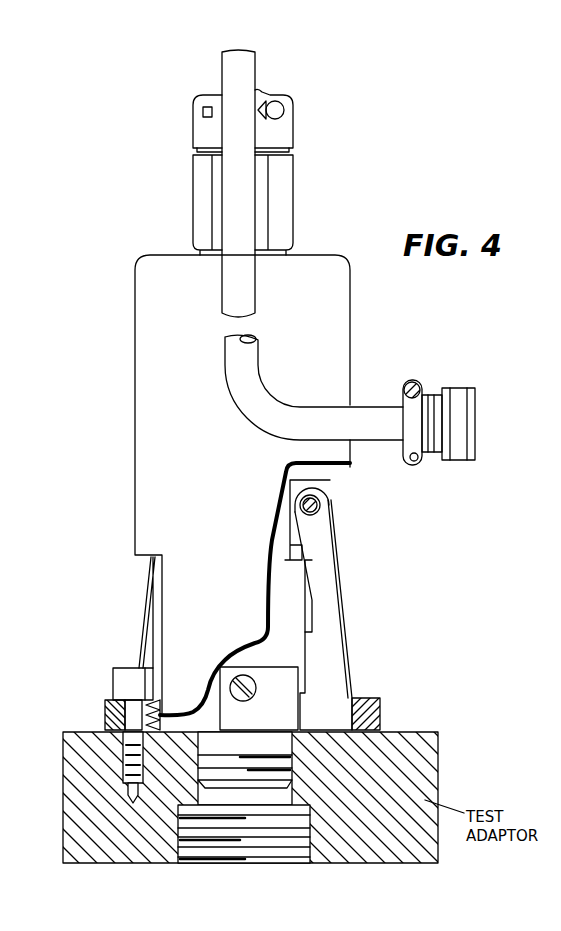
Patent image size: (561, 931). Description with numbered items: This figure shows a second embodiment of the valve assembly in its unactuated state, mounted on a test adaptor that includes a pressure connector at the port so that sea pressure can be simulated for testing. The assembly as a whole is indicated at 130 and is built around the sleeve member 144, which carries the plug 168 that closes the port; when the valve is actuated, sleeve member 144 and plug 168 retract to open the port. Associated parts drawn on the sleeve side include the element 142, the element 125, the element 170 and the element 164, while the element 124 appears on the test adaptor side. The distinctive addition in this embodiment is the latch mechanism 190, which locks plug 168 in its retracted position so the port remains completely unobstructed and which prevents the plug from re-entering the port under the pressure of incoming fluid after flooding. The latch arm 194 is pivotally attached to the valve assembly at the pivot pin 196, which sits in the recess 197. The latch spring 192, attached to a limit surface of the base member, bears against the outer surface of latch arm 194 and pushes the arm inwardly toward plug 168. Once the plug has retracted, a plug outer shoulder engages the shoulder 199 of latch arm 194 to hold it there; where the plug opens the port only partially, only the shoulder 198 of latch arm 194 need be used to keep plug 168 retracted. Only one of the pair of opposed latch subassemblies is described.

The probe drive assembly 130 is at (324, 172).
The sleeve member 144 is at (153, 380).
The probe 142 is at (187, 610).
The contact block 125 is at (120, 686).
The probe receptacle 170 is at (207, 762).
The mounting block 164 is at (250, 678).
The plug 168 is at (280, 745).
The shoulder 198 is at (305, 690).
The shoulder 199 is at (307, 627).
The recess 197 is at (317, 482).
The pivot pin 196 is at (318, 508).
The latch mechanism 190 is at (400, 574).
The latch arm 194 is at (343, 628).
The latch spring 192 is at (350, 682).
The locating block 124 is at (380, 713).